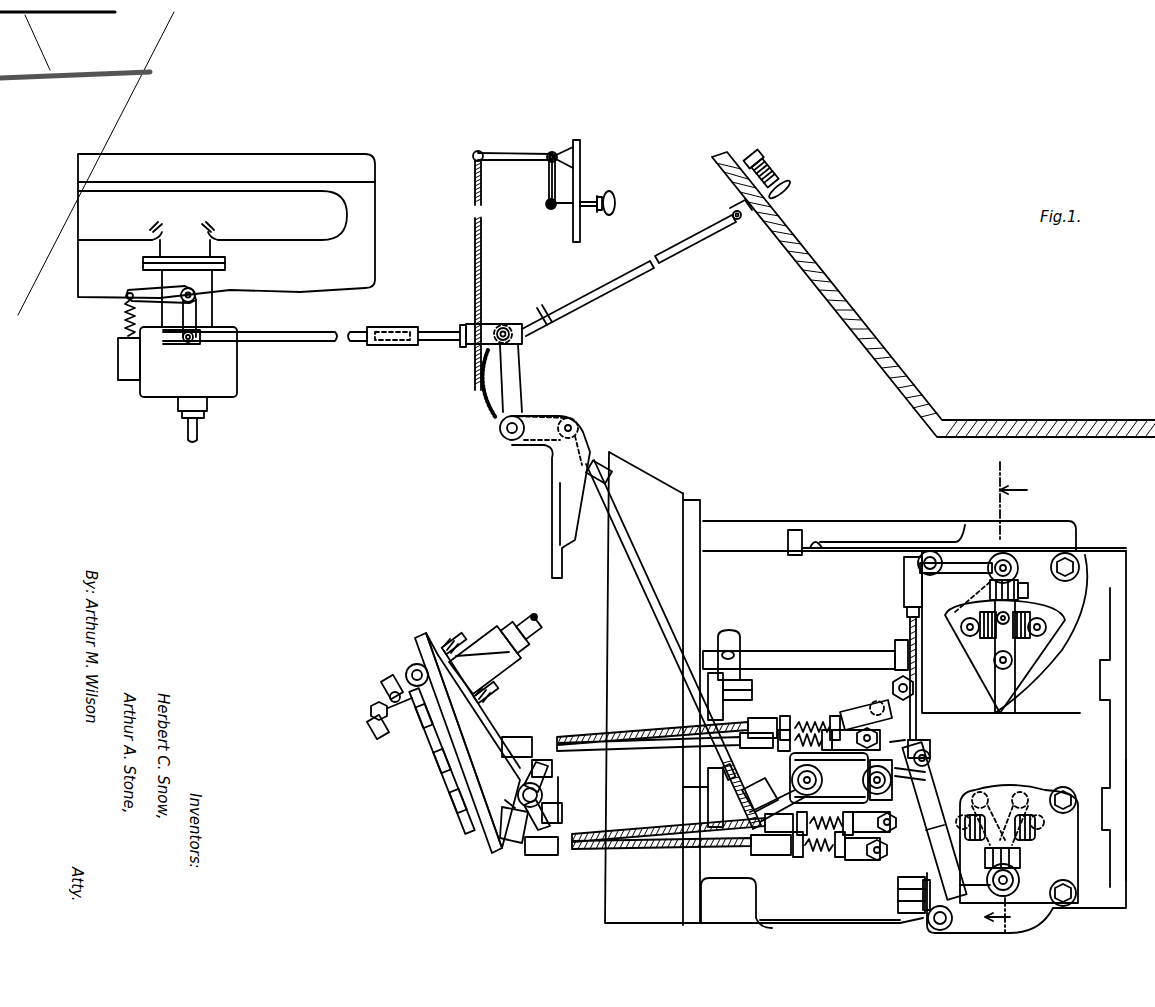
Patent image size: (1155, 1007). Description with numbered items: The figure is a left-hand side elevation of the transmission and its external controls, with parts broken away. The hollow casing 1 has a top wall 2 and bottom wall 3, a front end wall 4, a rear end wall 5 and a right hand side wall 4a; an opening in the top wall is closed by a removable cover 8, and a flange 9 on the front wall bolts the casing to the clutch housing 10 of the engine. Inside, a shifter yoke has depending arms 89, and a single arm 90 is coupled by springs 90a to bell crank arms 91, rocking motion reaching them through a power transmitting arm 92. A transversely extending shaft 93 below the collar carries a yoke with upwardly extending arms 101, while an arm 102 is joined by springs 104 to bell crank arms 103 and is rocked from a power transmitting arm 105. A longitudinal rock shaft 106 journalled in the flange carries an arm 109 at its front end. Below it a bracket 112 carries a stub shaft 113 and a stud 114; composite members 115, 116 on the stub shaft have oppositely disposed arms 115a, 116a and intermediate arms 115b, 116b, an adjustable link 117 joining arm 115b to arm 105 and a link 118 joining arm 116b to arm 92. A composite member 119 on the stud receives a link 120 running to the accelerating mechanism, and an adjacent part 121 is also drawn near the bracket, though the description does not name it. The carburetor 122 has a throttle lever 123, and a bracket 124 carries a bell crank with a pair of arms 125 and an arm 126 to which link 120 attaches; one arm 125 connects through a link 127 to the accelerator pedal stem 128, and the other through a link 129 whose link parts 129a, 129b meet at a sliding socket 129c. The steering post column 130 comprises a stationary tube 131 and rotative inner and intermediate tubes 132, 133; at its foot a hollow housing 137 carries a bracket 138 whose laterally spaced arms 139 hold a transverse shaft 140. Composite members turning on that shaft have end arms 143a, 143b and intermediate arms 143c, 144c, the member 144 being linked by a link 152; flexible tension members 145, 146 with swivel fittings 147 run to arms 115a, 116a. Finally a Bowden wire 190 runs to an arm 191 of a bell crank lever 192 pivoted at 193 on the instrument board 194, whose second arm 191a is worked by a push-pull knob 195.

The hollow casing 1 is at (1135, 716).
The top wall 2 is at (1114, 550).
The bottom wall 3 is at (762, 925).
The front end wall 4 is at (683, 877).
The right hand side wall 4a is at (830, 906).
The rear end wall 5 is at (1128, 825).
The removable cover 8 is at (990, 526).
The flange 9 is at (700, 508).
The clutch housing 10 is at (640, 480).
The depending arms 89 is at (975, 660).
The single arm 90 is at (1020, 597).
The springs 90a is at (1028, 638).
The bell crank arms 91 is at (1040, 624).
The power transmitting arm 92 is at (940, 577).
The transversely extending shaft 93 is at (1020, 882).
The upwardly extending arms 101 is at (1005, 786).
The arm 102 is at (1022, 855).
The bell crank arms 103 is at (980, 858).
The springs 104 is at (972, 845).
The power transmitting arm 105 is at (962, 888).
The rock shaft 106 is at (803, 652).
The arm 109 is at (740, 662).
The bracket 112 is at (890, 686).
The stub shaft 113 is at (870, 790).
The stud 114 is at (822, 778).
The composite member 115 is at (836, 860).
The oppositely disposed arms 115a is at (896, 743).
The intermediate arm 115b is at (930, 757).
The composite member 116 is at (900, 822).
The oppositely disposed arms 116a is at (866, 850).
The intermediate arm 116b is at (928, 776).
The adjustable link 117 is at (925, 835).
The link 118 is at (920, 663).
The composite member 119 is at (788, 786).
The link 120 is at (670, 672).
The block 121 is at (723, 712).
The carburetor 122 is at (247, 377).
The throttle lever 123 is at (196, 310).
The bracket 124 is at (552, 468).
The pair of arms 125 is at (530, 374).
The arm 126 is at (546, 418).
The link 127 is at (604, 278).
The accelerator pedal stem 128 is at (796, 175).
The link 129 is at (440, 342).
The link part 129a is at (300, 330).
The link part 129b is at (472, 322).
The socket 129c is at (410, 318).
The steering post column 130 is at (495, 613).
The stationary tube 131 is at (500, 660).
The inner tube 132 is at (540, 622).
The intermediate tube 133 is at (522, 638).
The hollow housing 137 is at (456, 628).
The bracket 138 is at (497, 722).
The laterally spaced arms 139 is at (490, 764).
The transverse shaft 140 is at (545, 797).
The end arm 143a is at (552, 768).
The end arm 143b is at (514, 848).
The intermediate arm 143c is at (490, 852).
The composite member 144 is at (548, 814).
The intermediate arm 144c is at (510, 800).
The flexible tension members 145 is at (578, 846).
The flexible tension members 146 is at (668, 848).
The swivel fittings 147 is at (836, 709).
The link 152 is at (445, 780).
The Bowden wire 190 is at (482, 288).
The arm 191 is at (520, 160).
The second arm 191a is at (548, 205).
The bell crank lever 192 is at (545, 182).
The pivot 193 is at (548, 155).
The instrument board 194 is at (580, 162).
The push-pull knob 195 is at (615, 200).